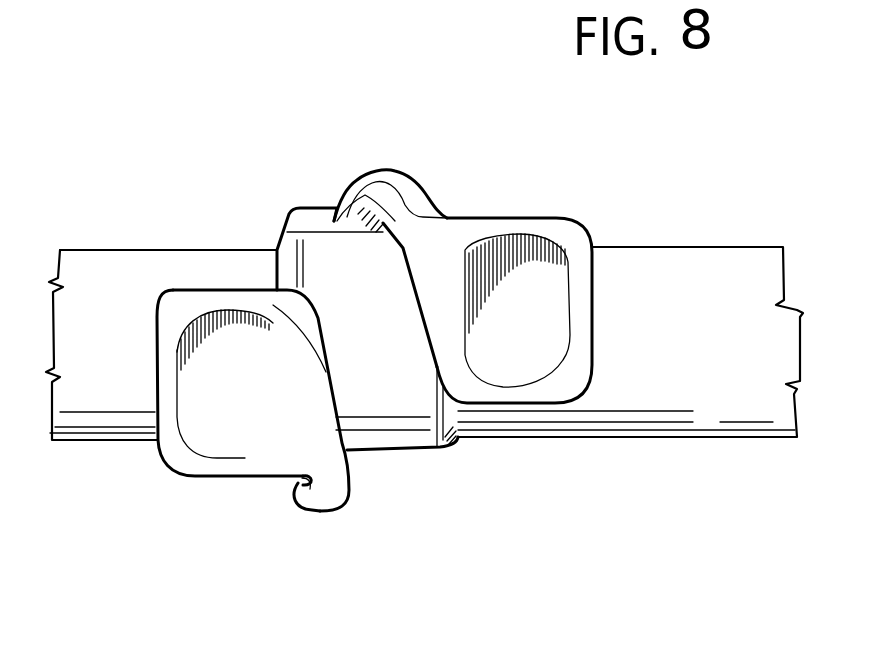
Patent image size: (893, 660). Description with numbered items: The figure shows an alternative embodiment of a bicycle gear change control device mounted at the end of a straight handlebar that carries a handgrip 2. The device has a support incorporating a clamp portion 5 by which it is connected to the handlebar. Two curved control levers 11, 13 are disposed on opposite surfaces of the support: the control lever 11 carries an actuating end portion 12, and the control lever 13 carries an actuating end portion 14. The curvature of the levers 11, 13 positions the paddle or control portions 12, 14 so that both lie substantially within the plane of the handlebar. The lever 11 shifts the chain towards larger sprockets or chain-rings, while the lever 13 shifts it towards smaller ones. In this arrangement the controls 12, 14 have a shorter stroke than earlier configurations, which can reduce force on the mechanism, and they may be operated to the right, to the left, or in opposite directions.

The handgrip 2 is at (727, 263).
The clamp portion 5 is at (410, 397).
The control lever 11 is at (410, 193).
The actuating end portion 12 is at (537, 278).
The control lever 13 is at (330, 493).
The actuating end portion 14 is at (222, 370).